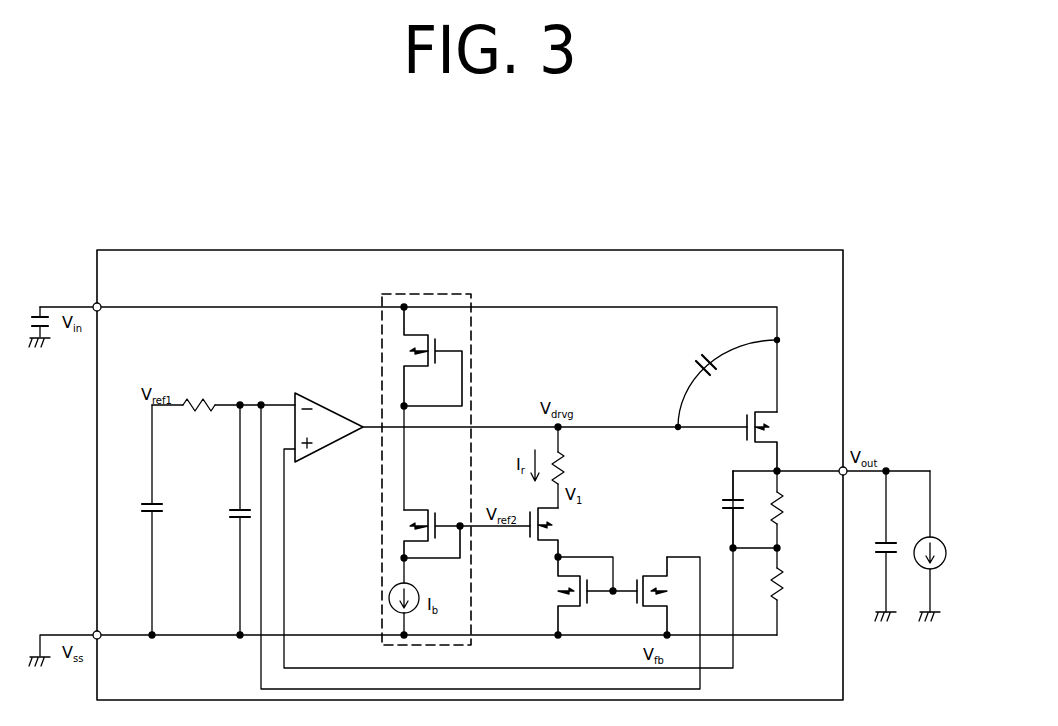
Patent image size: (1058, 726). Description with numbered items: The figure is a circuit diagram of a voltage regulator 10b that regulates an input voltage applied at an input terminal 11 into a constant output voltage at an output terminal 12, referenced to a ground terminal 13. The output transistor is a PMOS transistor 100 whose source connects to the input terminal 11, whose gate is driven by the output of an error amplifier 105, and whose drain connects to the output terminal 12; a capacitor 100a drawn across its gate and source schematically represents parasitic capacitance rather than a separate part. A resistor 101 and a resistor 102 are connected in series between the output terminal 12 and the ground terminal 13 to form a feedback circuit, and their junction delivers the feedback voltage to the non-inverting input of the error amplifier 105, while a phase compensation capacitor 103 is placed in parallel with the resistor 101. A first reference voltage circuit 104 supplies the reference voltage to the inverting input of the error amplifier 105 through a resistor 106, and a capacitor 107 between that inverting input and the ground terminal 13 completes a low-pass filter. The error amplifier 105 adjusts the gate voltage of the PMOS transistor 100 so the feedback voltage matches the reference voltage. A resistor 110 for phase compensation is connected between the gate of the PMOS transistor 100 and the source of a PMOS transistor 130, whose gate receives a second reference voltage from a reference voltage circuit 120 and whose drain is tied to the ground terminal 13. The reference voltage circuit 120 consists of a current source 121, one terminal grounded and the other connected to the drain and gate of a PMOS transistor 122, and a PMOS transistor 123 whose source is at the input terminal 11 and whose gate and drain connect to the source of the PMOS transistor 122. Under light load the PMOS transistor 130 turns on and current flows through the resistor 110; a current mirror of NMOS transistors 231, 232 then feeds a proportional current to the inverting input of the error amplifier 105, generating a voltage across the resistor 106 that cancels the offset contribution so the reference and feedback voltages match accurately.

The voltage regulator 10b is at (838, 250).
The input terminal 11 is at (93, 305).
The ground terminal 13 is at (93, 633).
The output terminal 12 is at (846, 474).
The reference voltage circuit 104 is at (148, 502).
The error amplifier 105 is at (310, 400).
The resistor 106 is at (198, 403).
The capacitor 107 is at (235, 508).
The reference voltage circuit 120 is at (471, 366).
The current source 121 is at (420, 600).
The PMOS transistor 122 is at (415, 510).
The PMOS transistor 123 is at (418, 371).
The resistor 110 is at (560, 455).
The PMOS transistor 130 is at (555, 552).
The NMOS transistor 231 is at (556, 601).
The NMOS transistor 232 is at (643, 578).
The PMOS transistor 100 is at (768, 411).
The capacitor 100a is at (698, 365).
The phase compensation capacitor 103 is at (725, 500).
The resistor 101 is at (783, 515).
The resistor 102 is at (783, 592).